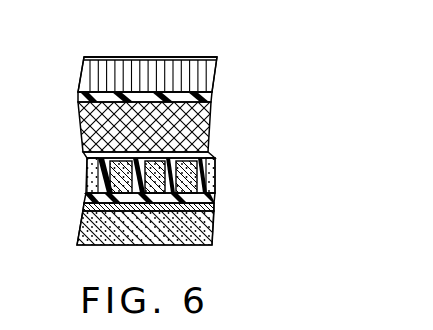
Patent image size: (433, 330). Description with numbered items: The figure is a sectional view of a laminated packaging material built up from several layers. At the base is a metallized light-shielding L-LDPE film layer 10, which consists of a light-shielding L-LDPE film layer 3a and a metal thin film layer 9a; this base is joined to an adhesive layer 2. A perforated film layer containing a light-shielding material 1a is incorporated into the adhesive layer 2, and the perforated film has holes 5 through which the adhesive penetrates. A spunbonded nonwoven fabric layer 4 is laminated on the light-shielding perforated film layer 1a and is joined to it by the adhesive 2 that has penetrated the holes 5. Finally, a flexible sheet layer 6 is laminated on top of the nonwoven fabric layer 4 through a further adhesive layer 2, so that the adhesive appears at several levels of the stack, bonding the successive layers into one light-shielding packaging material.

The flexible sheet layer 6 is at (213, 72).
The adhesive layer 2 is at (79, 96).
The spunbonded nonwoven fabric layer 4 is at (212, 120).
The perforated film layer containing a light-shielding material 1a is at (213, 178).
The holes 5 is at (88, 178).
The metal thin film layer 9a is at (215, 212).
The light-shielding L-LDPE film layer 3a is at (215, 235).
The metallized light-shielding L-LDPE film layer 10 is at (290, 217).